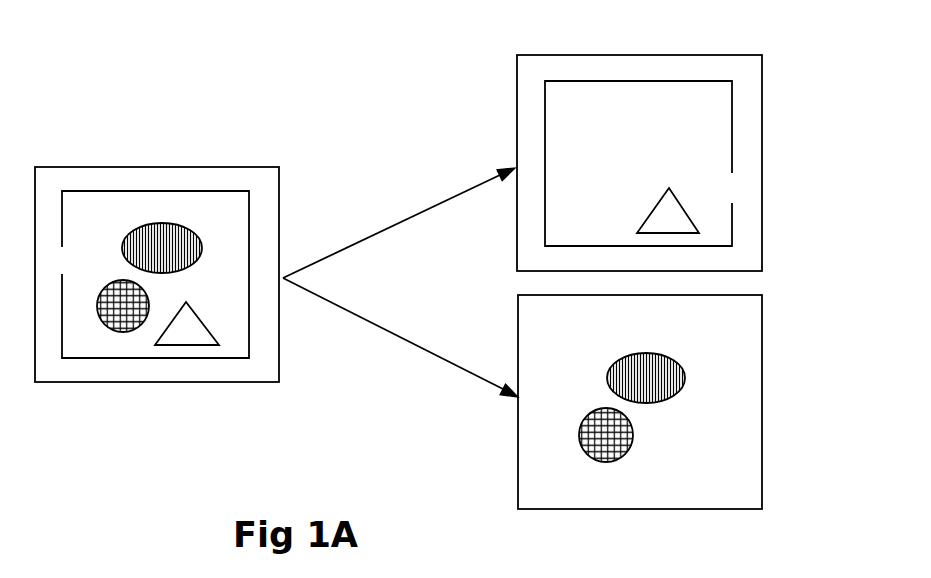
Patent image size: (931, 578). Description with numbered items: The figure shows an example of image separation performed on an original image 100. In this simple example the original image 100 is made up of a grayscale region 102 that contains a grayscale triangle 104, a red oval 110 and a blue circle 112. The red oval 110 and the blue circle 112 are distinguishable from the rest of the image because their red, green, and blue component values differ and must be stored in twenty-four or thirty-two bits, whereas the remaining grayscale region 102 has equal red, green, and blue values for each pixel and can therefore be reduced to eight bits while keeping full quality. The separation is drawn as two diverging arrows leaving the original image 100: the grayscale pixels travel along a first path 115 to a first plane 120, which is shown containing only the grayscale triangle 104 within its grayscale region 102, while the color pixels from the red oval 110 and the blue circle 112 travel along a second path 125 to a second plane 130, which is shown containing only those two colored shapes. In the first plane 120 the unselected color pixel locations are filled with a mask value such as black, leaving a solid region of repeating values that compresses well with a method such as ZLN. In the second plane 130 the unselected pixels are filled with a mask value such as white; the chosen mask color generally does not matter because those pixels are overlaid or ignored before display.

The original image 100 is at (280, 210).
The grayscale region 102 is at (199, 191).
The grayscale triangle 104 is at (186, 302).
The red oval 110 is at (163, 223).
The blue circle 112 is at (127, 280).
The first path 115 is at (367, 240).
The first plane 120 is at (762, 109).
The second path 125 is at (370, 325).
The second plane 130 is at (763, 363).